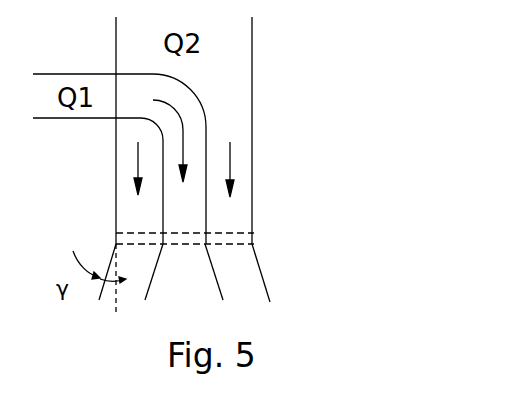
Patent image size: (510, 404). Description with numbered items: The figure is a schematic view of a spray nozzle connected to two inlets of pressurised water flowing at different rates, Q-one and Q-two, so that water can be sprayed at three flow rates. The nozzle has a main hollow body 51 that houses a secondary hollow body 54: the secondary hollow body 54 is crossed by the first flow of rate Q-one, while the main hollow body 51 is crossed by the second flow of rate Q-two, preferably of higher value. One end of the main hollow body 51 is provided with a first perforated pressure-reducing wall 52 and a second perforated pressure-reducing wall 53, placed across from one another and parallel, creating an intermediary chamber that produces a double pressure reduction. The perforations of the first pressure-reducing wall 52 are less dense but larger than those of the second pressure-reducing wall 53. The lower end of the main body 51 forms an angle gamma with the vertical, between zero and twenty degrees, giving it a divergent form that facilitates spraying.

The main hollow body 51 is at (252, 162).
The first perforated pressure-reducing wall 52 is at (252, 229).
The second perforated pressure-reducing wall 53 is at (220, 244).
The secondary hollow body 54 is at (195, 95).